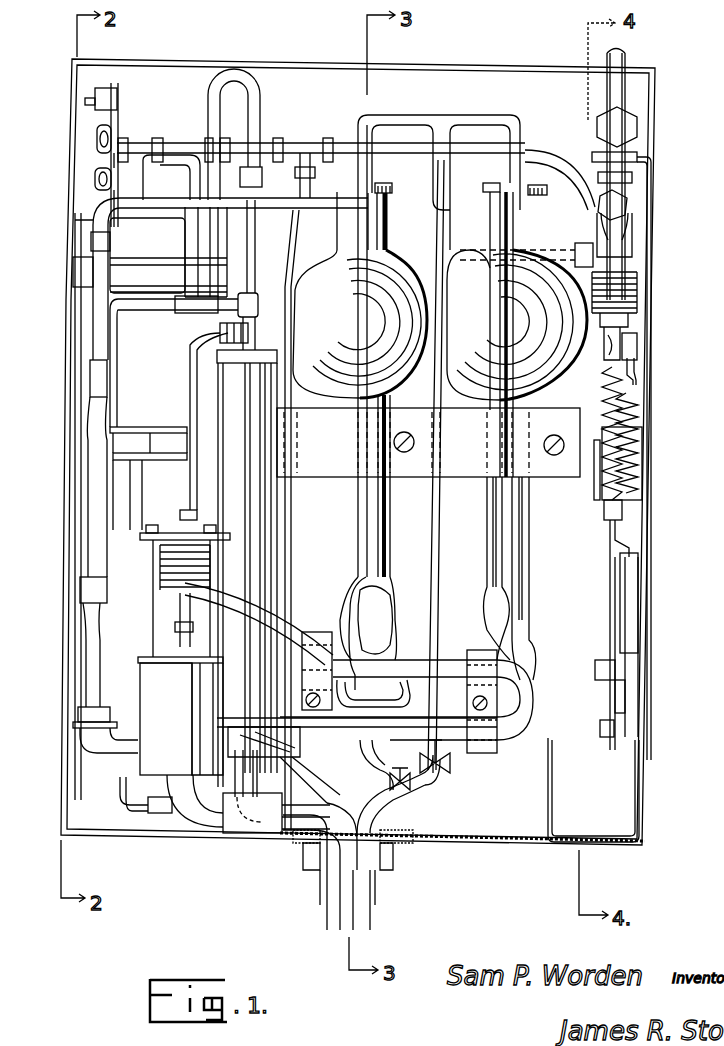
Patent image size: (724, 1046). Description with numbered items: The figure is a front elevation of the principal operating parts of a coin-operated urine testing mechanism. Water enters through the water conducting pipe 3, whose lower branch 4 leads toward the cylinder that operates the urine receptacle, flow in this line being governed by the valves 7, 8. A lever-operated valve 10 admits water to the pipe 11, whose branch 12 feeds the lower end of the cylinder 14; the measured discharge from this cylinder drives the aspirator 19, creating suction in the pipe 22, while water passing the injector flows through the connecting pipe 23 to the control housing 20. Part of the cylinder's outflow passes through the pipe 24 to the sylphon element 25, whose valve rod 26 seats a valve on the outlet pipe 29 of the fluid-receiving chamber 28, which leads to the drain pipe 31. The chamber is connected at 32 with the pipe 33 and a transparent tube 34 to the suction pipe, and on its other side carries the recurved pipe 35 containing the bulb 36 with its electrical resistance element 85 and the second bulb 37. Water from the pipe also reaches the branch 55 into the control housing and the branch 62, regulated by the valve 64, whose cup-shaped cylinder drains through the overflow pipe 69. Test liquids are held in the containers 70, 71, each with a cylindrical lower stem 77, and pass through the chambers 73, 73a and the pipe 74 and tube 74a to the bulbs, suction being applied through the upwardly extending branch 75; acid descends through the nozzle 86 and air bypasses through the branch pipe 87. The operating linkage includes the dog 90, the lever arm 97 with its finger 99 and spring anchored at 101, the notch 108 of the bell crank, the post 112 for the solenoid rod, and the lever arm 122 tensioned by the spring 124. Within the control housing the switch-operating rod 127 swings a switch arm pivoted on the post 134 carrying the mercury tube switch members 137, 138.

The water conducting pipe 3 is at (438, 545).
The branch 4 is at (407, 812).
The valve 7 is at (450, 765).
The valve 8 is at (393, 792).
The valve 10 is at (637, 290).
The pipe 11 is at (557, 160).
The branch 12 is at (288, 507).
The cylinder 14 is at (278, 550).
The aspirator 19 is at (257, 296).
The control housing 20 is at (82, 350).
The pipe 22 is at (165, 307).
The connecting pipe 23 is at (253, 258).
The pipe 24 is at (190, 507).
The sylphon element 25 is at (212, 550).
The valve rod 26 is at (192, 618).
The fluid-receiving chamber 28 is at (145, 777).
The outlet pipe 29 is at (297, 833).
The drain pipe 31 is at (320, 897).
The connection 32 is at (85, 752).
The pipe 33 is at (87, 657).
The transparent tube 34 is at (88, 538).
The pipe 35 is at (373, 745).
The bulb 36 is at (347, 773).
The bulb 37 is at (373, 693).
The branch 55 is at (176, 177).
The branch 62 is at (140, 185).
The valve 64 is at (135, 147).
The overflow pipe 69 is at (140, 815).
The container 70 is at (470, 380).
The container 71 is at (332, 380).
The chamber 73 is at (510, 215).
The chamber 73a is at (372, 245).
The pipe 74 is at (510, 555).
The tube 74a is at (380, 508).
The branch 75 is at (160, 207).
The lower stem 77 is at (525, 505).
The electrical resistance element 85 is at (372, 722).
The nozzle 86 is at (370, 672).
The branch pipe 87 is at (390, 600).
The dog 90 is at (605, 737).
The lever arm 97 is at (637, 347).
The finger 99 is at (634, 372).
The spring lower end 101 is at (639, 508).
The notch 108 is at (629, 405).
The post 112 is at (625, 687).
The lever arm 122 is at (619, 330).
The tension spring 124 is at (625, 535).
The switch-operating rod 127 is at (123, 188).
The post 134 is at (140, 100).
The mercury tube switch member 137 is at (97, 138).
The mercury tube switch member 138 is at (95, 180).